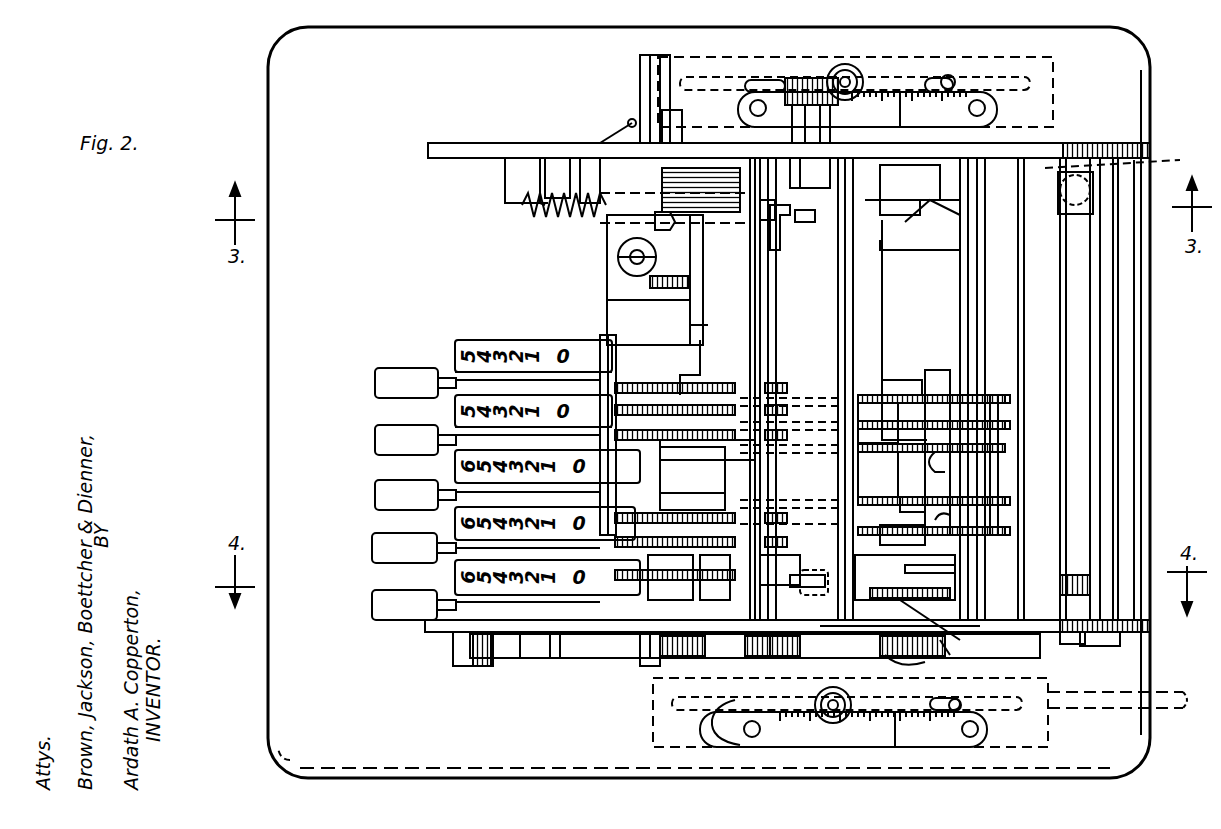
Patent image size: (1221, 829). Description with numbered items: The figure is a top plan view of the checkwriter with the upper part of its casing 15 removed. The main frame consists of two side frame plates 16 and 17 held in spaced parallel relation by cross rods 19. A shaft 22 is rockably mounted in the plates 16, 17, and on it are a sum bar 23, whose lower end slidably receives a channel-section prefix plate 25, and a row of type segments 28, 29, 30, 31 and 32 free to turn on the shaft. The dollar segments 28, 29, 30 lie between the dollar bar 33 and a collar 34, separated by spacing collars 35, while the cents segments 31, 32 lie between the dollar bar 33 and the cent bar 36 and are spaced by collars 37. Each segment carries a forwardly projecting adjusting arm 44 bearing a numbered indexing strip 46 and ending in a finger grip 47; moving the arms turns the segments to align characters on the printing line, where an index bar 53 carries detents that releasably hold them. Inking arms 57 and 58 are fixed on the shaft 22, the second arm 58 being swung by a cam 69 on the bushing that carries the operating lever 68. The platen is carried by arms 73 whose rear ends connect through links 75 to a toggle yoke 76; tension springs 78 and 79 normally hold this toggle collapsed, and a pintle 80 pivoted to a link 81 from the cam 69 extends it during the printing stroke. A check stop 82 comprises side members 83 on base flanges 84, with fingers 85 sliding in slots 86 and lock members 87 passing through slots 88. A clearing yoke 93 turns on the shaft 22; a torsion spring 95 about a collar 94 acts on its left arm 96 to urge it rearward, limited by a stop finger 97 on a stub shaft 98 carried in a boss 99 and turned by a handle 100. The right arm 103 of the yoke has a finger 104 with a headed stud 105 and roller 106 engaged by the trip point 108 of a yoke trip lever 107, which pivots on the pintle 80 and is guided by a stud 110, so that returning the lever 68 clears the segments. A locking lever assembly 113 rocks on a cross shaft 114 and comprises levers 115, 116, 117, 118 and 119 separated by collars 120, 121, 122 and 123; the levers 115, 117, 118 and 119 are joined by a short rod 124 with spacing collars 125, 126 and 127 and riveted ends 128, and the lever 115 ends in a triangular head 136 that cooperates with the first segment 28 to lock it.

The casing 15 is at (272, 320).
The side frame plate 16 is at (468, 140).
The side frame plate 17 is at (445, 625).
The cross rods 19 is at (762, 355).
The shaft 22 is at (670, 577).
The sum bar 23 is at (685, 255).
The prefix plate 25 is at (645, 95).
The type segment 28 is at (625, 383).
The type segment 29 is at (690, 395).
The type segment 30 is at (692, 470).
The cents segment 31 is at (692, 503).
The cents segment 32 is at (675, 577).
The dollar bar 33 is at (715, 477).
The collar 34 is at (675, 308).
The spacing collars 35 is at (690, 373).
The cent bar 36 is at (660, 560).
The spacing collars 37 is at (726, 516).
The adjusting arm 44 is at (450, 398).
The indexing strip 46 is at (578, 372).
The finger grip 47 is at (375, 390).
The index bar 53 is at (828, 330).
The first inking arm 57 is at (590, 175).
The second inking arm 58 is at (590, 635).
The operating lever 68 is at (1170, 712).
The cam 69 is at (917, 665).
The arms 73 is at (1070, 640).
The links 75 is at (935, 213).
The toggle yoke 76 is at (1000, 333).
The tension spring 78 is at (578, 218).
The second tension spring 79 is at (1124, 179).
The pintle 80 is at (895, 565).
The link 81 is at (961, 655).
The adjustable stop means 82 is at (878, 72).
The side members 83 is at (920, 85).
The side flanges 84 is at (1055, 96).
The fingers 85 is at (745, 82).
The lengthwise slots 86 is at (1032, 83).
The adjusting and lock members 87 is at (838, 65).
The lengthwise slots 88 is at (955, 82).
The clearing yoke 93 is at (708, 325).
The collar 94 is at (615, 135).
The torsion spring 95 is at (660, 185).
The left arm 96 is at (655, 217).
The stop finger 97 is at (790, 235).
The stub shaft 98 is at (805, 222).
The boss 99 is at (810, 175).
The handle 100 is at (795, 78).
The right arm 103 is at (655, 660).
The finger 104 is at (795, 640).
The headed stud 105 is at (780, 555).
The roller 106 is at (790, 590).
The yoke trip lever 107 is at (946, 629).
The trip point 108 is at (795, 575).
The stud 110 is at (900, 626).
The locking lever assembly 113 is at (1000, 470).
The cross shaft 114 is at (968, 265).
The lever 115 is at (935, 390).
The lever 116 is at (940, 418).
The lever 117 is at (952, 463).
The lever 118 is at (920, 495).
The lever 119 is at (954, 520).
The collar 120 is at (1005, 410).
The collar 121 is at (990, 437).
The collar 122 is at (990, 492).
The collar 123 is at (1005, 522).
The short rod 124 is at (975, 392).
The spacing collar 125 is at (876, 423).
The spacing collar 126 is at (876, 474).
The spacing collar 127 is at (902, 536).
The riveted ends 128 is at (868, 393).
The triangular head 136 is at (700, 350).